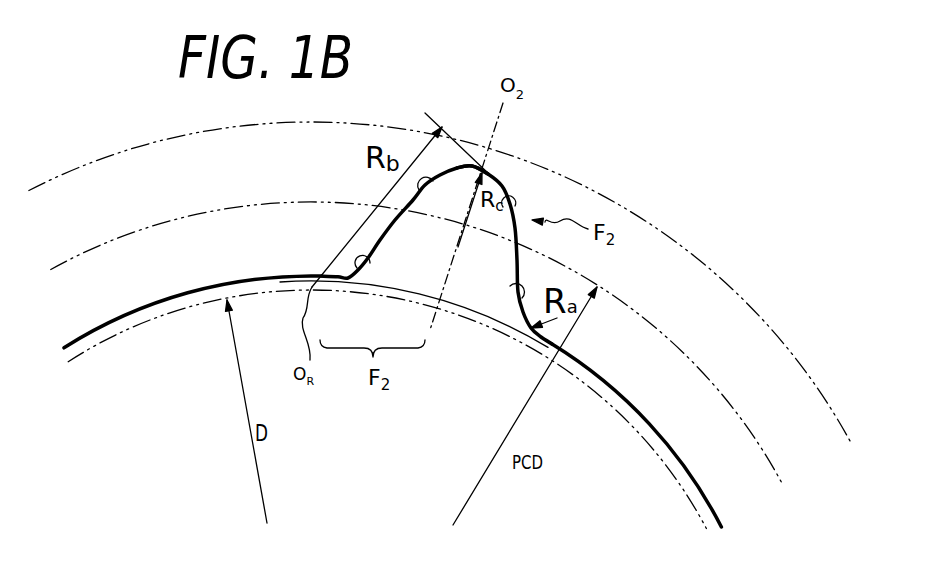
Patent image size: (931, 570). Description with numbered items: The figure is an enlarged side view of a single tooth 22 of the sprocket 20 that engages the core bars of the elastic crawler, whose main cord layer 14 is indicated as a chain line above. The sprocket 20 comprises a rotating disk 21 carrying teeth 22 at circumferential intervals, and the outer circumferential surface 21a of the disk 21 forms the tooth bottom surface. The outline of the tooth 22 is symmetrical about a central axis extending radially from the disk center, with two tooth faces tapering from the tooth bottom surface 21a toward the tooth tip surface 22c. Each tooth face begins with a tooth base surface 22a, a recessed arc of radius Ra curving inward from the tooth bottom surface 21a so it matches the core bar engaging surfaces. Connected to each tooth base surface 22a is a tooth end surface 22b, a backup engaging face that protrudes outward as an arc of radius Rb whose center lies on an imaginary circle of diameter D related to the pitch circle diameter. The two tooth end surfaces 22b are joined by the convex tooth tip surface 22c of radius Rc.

The main cord layer 14 is at (763, 317).
The sprocket 20 is at (663, 252).
The disk 21 is at (430, 390).
The outer circumferential surface 21a is at (262, 279).
The tooth 22 is at (540, 160).
The tooth base surface 22a is at (357, 268).
The tooth end surface 22b is at (419, 190).
The tooth tip surface 22c is at (467, 164).